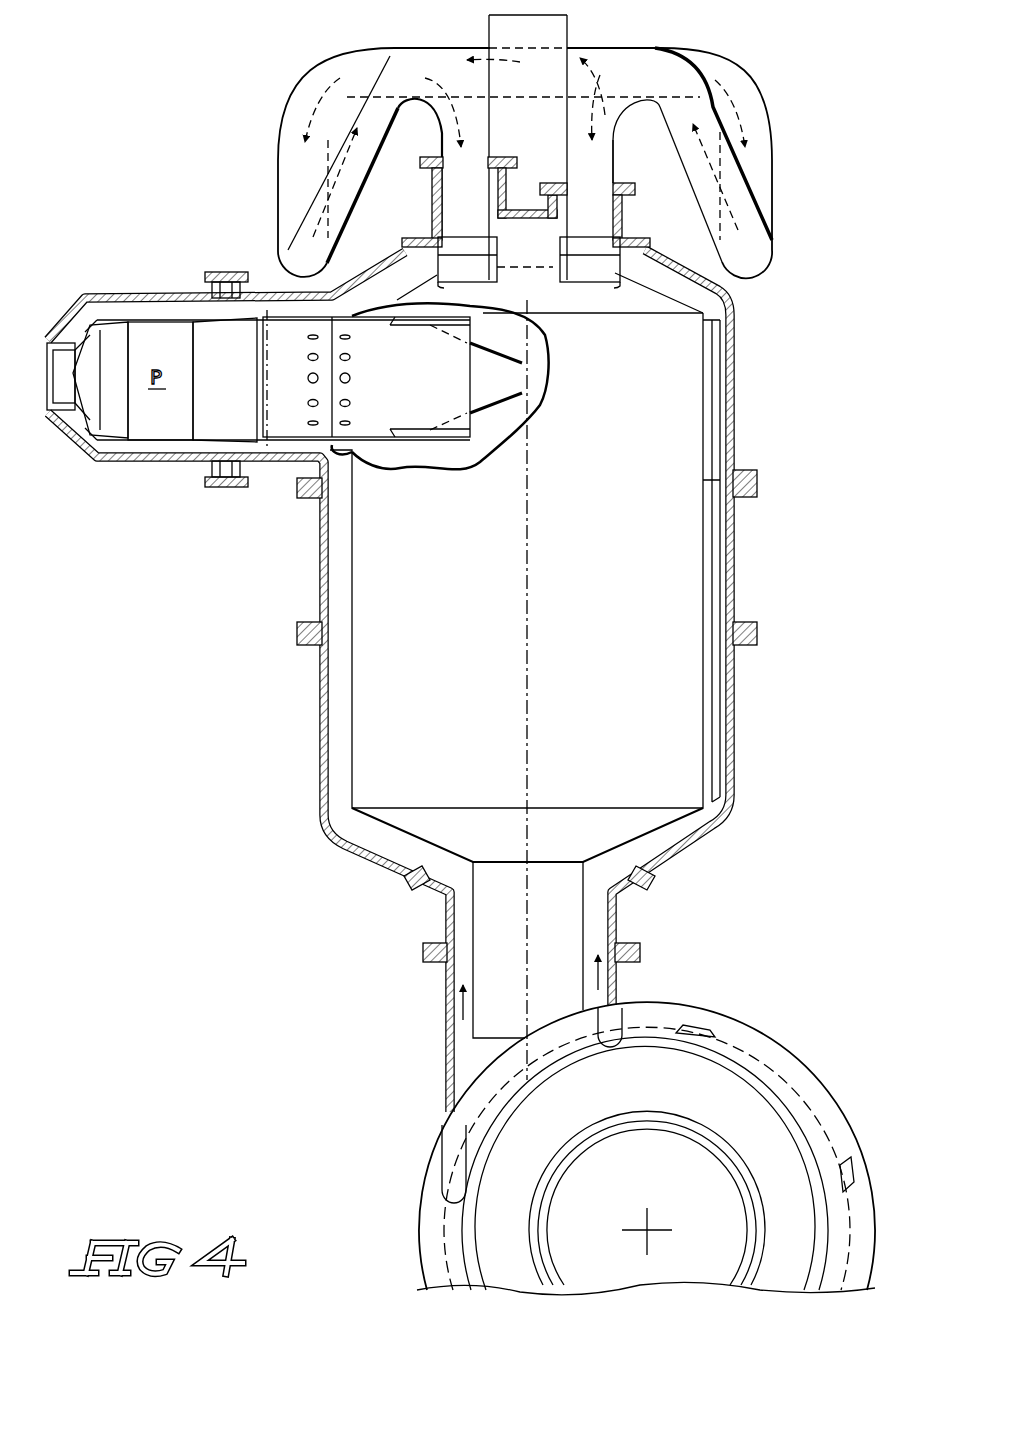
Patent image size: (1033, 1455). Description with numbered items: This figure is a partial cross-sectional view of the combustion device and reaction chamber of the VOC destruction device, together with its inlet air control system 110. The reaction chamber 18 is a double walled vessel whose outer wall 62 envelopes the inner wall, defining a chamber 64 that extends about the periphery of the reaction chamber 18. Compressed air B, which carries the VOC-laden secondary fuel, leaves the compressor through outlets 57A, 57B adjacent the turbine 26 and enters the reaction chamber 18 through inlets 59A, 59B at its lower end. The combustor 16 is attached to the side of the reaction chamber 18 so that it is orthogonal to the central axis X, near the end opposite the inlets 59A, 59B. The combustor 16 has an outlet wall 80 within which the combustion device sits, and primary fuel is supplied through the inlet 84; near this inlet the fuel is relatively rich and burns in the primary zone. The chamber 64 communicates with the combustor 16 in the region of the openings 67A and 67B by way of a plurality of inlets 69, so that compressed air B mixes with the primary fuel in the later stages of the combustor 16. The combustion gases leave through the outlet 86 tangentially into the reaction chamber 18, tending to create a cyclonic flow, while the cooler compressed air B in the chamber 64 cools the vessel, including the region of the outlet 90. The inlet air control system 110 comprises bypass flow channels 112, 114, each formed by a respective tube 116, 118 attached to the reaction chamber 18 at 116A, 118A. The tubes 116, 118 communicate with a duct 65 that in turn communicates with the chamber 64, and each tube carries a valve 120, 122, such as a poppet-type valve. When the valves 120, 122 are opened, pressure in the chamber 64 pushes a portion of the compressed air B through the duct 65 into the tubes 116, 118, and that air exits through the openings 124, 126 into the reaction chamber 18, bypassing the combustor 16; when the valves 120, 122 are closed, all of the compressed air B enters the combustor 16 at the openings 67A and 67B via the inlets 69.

The inlet air control system 110 is at (152, 152).
The bypass flow channel 112 is at (300, 72).
The bypass flow channel 114 is at (735, 58).
The tube 116 is at (278, 170).
The tube 118 is at (773, 130).
The attachment point of tube 116A is at (470, 265).
The attachment point of tube 118A is at (615, 280).
The valve 120 is at (445, 220).
The valve 122 is at (600, 227).
The inlet/outlet 124 is at (497, 283).
The inlet/outlet 126 is at (588, 284).
The duct 65 is at (543, 267).
The opening 67A is at (290, 282).
The opening 67B is at (292, 470).
The combustor 16 is at (72, 320).
The outlet wall 80 is at (163, 462).
The inlet 84 is at (62, 373).
The inlets 69 is at (366, 377).
The outlet 86 is at (470, 410).
The reaction chamber 18 is at (685, 553).
The chamber 64 is at (725, 508).
The outer wall 62 is at (735, 690).
The inlet 59A is at (458, 858).
The inlet 59B is at (592, 858).
The outlet 90 is at (585, 922).
The compressed air B is at (450, 1008).
The central axis X is at (527, 615).
The turbine 26 is at (790, 1115).
The outlet 57A is at (450, 1165).
The outlet 57B is at (625, 1040).